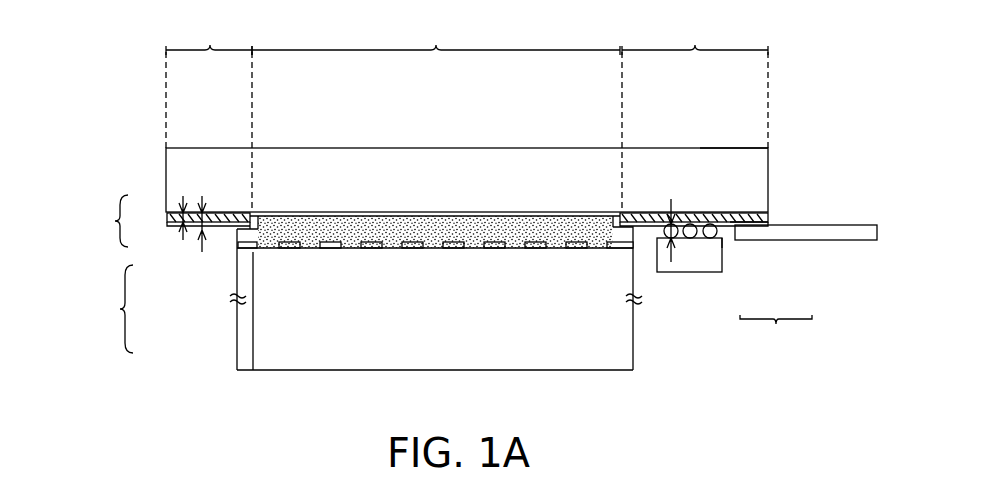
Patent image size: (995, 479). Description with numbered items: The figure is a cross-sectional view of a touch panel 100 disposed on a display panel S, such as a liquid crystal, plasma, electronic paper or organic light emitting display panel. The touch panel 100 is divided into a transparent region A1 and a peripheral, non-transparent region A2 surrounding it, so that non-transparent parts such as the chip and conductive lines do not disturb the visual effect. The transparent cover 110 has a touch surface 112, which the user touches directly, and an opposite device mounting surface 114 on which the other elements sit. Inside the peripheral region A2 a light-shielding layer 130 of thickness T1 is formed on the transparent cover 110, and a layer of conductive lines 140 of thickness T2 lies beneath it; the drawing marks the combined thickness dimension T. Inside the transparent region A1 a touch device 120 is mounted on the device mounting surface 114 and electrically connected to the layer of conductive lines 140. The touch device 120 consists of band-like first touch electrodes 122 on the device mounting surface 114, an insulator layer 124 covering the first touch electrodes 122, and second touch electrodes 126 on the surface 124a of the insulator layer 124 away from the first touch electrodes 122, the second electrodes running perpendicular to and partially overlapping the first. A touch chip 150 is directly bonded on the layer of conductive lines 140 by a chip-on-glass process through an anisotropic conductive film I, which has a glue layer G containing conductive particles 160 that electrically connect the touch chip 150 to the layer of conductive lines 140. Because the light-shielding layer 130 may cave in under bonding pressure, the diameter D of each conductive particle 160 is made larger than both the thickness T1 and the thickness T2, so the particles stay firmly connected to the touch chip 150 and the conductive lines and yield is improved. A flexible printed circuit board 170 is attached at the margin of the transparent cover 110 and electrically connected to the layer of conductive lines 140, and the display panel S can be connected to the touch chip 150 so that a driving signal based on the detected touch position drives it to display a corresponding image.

The touch panel 100 is at (451, 183).
The transparent cover 110 is at (756, 160).
The touch surface 112 is at (747, 144).
The device mounting surface 114 is at (745, 226).
The touch device 120 is at (384, 319).
The first touch electrodes 122 is at (237, 229).
The insulator layer 124 is at (237, 250).
The surface of the insulator layer 124a is at (340, 252).
The second touch electrodes 126 is at (237, 322).
The light-shielding layer 130 is at (769, 211).
The layer of conductive lines 140 is at (774, 222).
The touch chip 150 is at (700, 265).
The conductive particles 160 is at (720, 236).
The flexible printed circuit board 170 is at (847, 240).
The transparent region A1 is at (437, 114).
The peripheral region A2 is at (467, 82).
The total thickness T is at (112, 221).
The thickness of the light-shielding layer T1 is at (177, 208).
The thickness of the layer of conductive lines T2 is at (197, 227).
The diameter of conductive particle D is at (672, 262).
The glue layer G is at (730, 240).
The anisotropic conductive film I is at (776, 334).
The display panel S is at (625, 352).